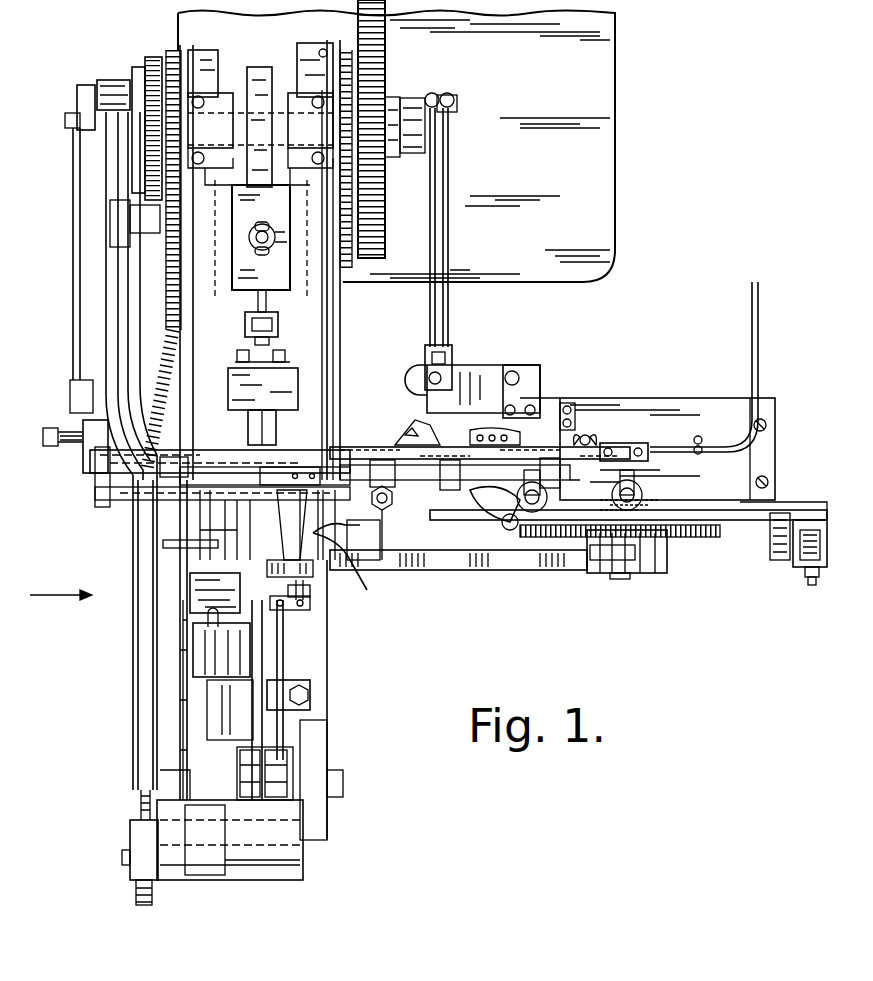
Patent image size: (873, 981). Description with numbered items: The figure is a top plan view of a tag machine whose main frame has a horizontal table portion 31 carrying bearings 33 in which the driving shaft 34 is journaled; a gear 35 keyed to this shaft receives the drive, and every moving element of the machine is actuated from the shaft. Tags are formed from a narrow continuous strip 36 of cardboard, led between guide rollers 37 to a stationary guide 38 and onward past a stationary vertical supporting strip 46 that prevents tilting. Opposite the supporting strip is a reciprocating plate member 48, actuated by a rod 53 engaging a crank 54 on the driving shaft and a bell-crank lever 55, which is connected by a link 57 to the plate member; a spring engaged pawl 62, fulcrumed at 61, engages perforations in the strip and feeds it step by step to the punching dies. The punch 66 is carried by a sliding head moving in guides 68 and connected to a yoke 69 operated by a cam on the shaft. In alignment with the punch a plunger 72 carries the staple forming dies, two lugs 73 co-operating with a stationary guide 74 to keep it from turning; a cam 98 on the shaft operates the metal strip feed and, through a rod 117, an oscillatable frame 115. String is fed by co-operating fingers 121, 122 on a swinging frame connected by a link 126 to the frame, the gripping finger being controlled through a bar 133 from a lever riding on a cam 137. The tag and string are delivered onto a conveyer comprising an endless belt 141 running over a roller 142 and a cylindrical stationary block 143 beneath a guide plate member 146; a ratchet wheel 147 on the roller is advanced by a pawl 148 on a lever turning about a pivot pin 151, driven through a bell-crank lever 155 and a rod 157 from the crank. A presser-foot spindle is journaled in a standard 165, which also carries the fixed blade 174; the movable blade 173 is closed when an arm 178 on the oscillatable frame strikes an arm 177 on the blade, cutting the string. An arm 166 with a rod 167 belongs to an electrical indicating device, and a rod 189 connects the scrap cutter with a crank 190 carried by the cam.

The horizontal table portion 31 is at (315, 650).
The bearings 33 is at (296, 97).
The driving shaft 34 is at (283, 83).
The gear 35 is at (386, 47).
The strip 36 is at (753, 333).
The guide rollers 37 is at (700, 443).
The stationary guide 38 is at (628, 446).
The stationary vertical supporting strip 46 is at (585, 440).
The plate member 48 is at (480, 456).
The rod 53 is at (430, 189).
The crank 54 is at (422, 100).
The bell-crank lever 55 is at (478, 372).
The link 57 is at (475, 432).
The fulcrum 61 is at (269, 322).
The spring engaged pawl 62 is at (410, 430).
The punch 66 is at (250, 430).
The guides 68 is at (340, 306).
The yoke 69 is at (250, 65).
The plunger 72 is at (283, 730).
The lugs 73 is at (320, 680).
The stationary guide 74 is at (208, 720).
The cam 98 is at (132, 161).
The oscillatable frame 115 is at (190, 882).
The rod 117 is at (133, 641).
The finger 121 is at (325, 605).
The finger 122 is at (310, 600).
The link 126 is at (242, 870).
The bar 133 is at (188, 297).
The cam 137 is at (150, 62).
The endless belt 141 is at (668, 558).
The roller 142 is at (653, 567).
The cylindrical stationary block 143 is at (310, 590).
The plate member 146 is at (475, 565).
The ratchet wheel 147 is at (695, 532).
The pawl 148 is at (752, 523).
The pivot pin 151 is at (672, 510).
The bell-crank lever 155 is at (478, 478).
The rod 157 is at (450, 302).
The standard 165 is at (240, 578).
The arm 166 is at (373, 523).
The rod 167 is at (340, 328).
The movable blade 173 is at (330, 566).
The fixed blade 174 is at (268, 560).
The arm 177 is at (163, 543).
The arm 178 is at (180, 682).
The rod 189 is at (72, 253).
The crank 190 is at (77, 97).